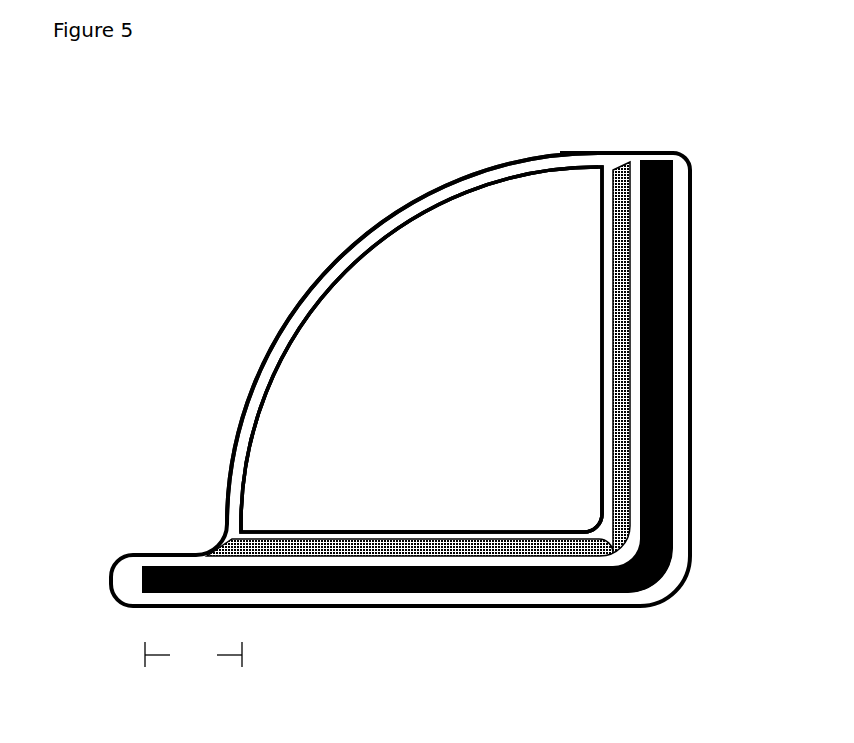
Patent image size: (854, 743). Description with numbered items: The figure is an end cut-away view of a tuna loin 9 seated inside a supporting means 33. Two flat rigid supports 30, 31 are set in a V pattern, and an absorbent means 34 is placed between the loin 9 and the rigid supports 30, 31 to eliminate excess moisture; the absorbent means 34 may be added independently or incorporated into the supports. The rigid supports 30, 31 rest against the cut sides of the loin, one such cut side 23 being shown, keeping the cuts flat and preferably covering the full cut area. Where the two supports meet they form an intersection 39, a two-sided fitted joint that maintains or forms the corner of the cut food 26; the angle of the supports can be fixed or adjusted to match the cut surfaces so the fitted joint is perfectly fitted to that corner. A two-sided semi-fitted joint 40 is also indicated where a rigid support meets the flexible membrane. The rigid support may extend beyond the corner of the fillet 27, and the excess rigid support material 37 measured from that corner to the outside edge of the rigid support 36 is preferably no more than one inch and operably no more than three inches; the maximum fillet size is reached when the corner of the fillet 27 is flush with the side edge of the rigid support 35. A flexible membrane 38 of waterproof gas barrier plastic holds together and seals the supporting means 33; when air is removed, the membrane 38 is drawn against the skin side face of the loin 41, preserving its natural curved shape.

The loin 9 is at (421, 349).
The cut side of the loin 23 is at (385, 534).
The corner of the cut food 26 is at (593, 513).
The corner of the fillet 27 is at (573, 172).
The rigid support 30 is at (505, 594).
The rigid support 31 is at (668, 372).
The supporting means 33 is at (307, 164).
The absorbent means 34 is at (620, 268).
The side edge of the rigid support 35 is at (666, 161).
The outside edge of the rigid support 36 is at (143, 583).
The excess rigid support material 37 is at (193, 654).
The flexible membrane 38 is at (305, 292).
The intersection 39 is at (660, 567).
The two-sided semi-fitted joint 40 is at (607, 160).
The skin side face of the loin 41 is at (323, 310).